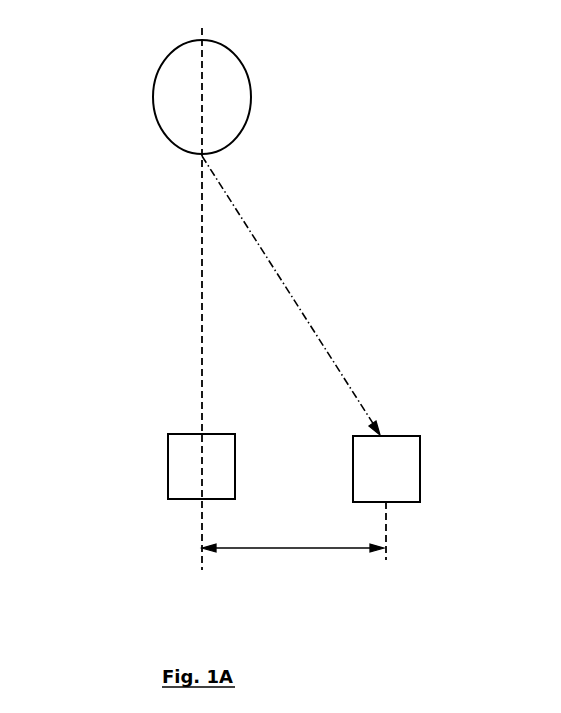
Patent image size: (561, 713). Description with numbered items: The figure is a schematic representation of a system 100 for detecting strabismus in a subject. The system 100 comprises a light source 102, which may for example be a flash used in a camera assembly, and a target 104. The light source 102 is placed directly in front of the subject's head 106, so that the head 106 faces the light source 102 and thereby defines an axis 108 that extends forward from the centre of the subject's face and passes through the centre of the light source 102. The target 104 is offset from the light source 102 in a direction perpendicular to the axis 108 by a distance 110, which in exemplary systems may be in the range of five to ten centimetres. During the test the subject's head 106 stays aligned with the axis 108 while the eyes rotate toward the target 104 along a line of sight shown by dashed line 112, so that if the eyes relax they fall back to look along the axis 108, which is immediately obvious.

The system 100 is at (375, 332).
The light source 102 is at (172, 460).
The target 104 is at (385, 437).
The subject's head 106 is at (153, 112).
The axis 108 is at (202, 319).
The distance 110 is at (290, 548).
The line of sight 112 is at (318, 333).